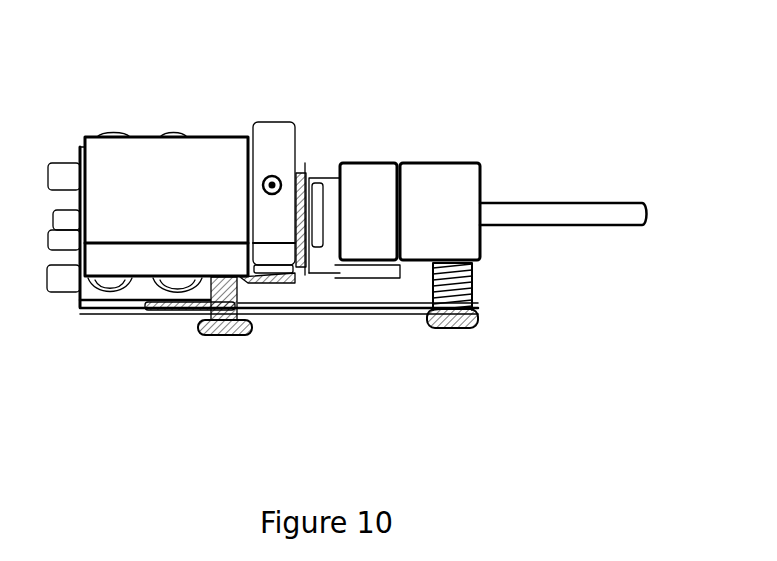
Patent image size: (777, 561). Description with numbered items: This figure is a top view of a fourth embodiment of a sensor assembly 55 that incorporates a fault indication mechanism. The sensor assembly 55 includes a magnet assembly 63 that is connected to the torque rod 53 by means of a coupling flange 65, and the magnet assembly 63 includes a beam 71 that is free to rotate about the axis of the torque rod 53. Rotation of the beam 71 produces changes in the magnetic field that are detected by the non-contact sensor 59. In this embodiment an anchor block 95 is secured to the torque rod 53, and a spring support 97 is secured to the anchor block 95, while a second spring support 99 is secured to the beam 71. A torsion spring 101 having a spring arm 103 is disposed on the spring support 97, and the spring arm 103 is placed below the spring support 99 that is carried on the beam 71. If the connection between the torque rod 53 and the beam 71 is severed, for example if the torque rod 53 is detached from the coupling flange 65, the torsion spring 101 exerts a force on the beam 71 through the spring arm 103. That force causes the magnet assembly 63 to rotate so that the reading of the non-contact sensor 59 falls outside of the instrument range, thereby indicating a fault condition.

The sensor assembly 55 is at (153, 71).
The non-contact sensor 59 is at (138, 137).
The magnet assembly 63 is at (279, 57).
The beam 71 is at (297, 153).
The coupling flange 65 is at (373, 162).
The anchor block 95 is at (427, 162).
The torque rod 53 is at (575, 203).
The torsion spring 101 is at (473, 288).
The spring support 97 is at (452, 330).
The spring support 99 is at (247, 335).
The spring arm 103 is at (295, 313).